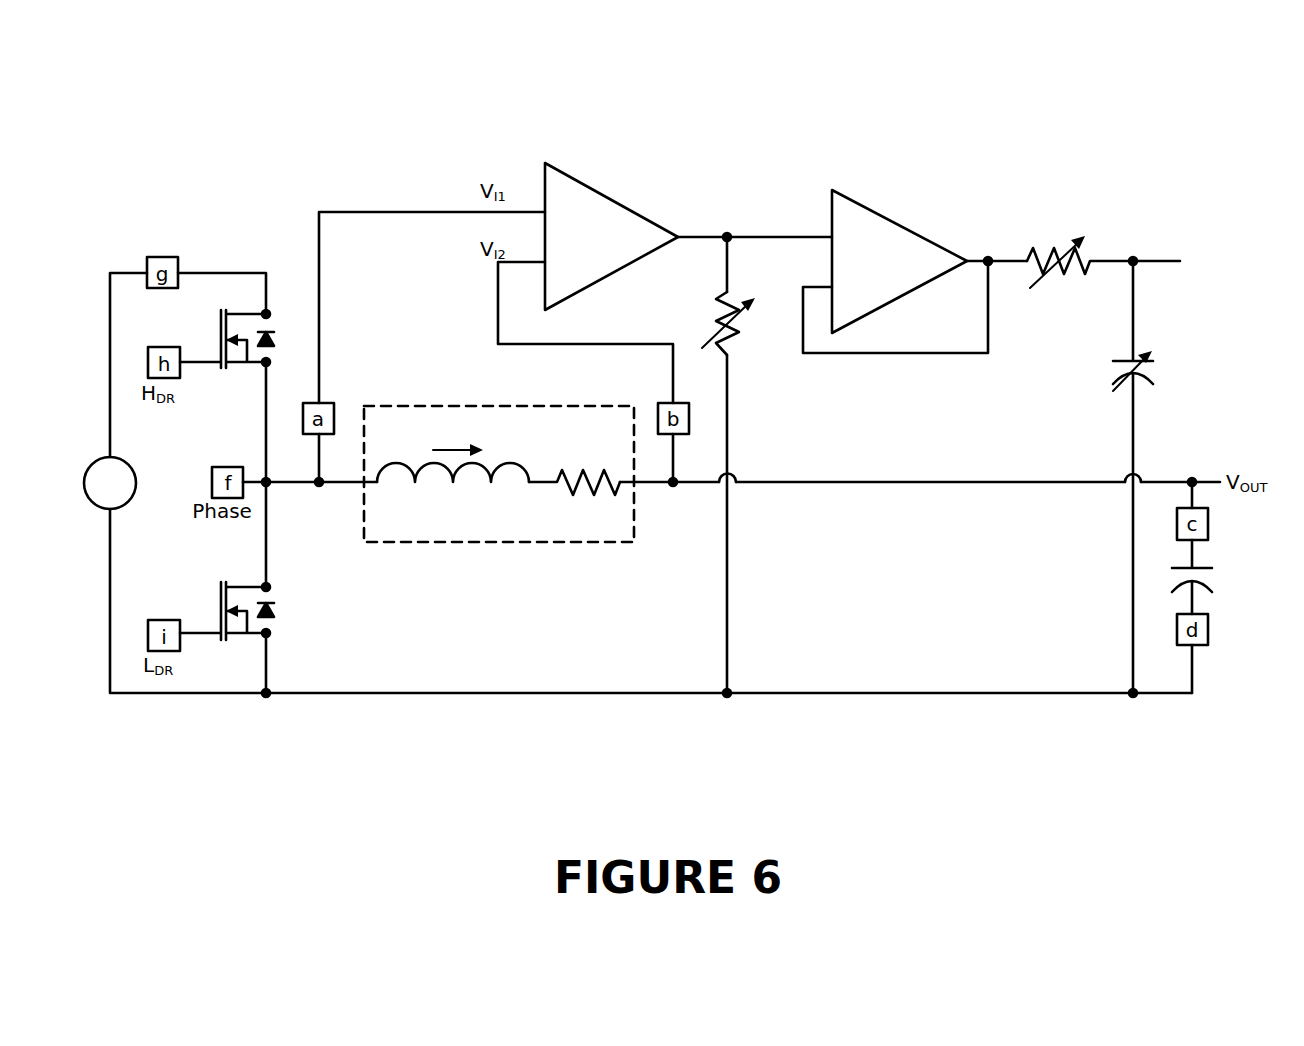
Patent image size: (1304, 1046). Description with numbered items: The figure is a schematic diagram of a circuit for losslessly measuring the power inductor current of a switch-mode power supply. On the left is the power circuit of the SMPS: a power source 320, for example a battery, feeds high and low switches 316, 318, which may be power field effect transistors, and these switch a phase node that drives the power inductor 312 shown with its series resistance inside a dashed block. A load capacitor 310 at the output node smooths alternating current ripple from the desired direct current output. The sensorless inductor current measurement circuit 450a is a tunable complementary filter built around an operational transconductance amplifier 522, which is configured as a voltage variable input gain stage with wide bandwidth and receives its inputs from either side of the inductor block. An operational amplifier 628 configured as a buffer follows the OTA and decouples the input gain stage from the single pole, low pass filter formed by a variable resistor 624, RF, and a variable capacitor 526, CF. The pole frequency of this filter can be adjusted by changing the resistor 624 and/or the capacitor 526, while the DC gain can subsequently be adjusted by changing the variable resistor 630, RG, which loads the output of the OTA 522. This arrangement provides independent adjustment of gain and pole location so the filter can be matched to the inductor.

The sensorless inductor current measurement circuit 450a is at (827, 90).
The operational transconductance amplifier 522 is at (636, 208).
The operational amplifier 628 is at (921, 234).
The variable resistor 624 is at (1059, 247).
The variable resistor 630 is at (733, 300).
The variable capacitor 526 is at (1157, 354).
The power inductor 312 is at (446, 408).
The high switch 316 is at (219, 337).
The low switch 318 is at (219, 608).
The power source 320 is at (138, 479).
The load capacitor 310 is at (1208, 562).